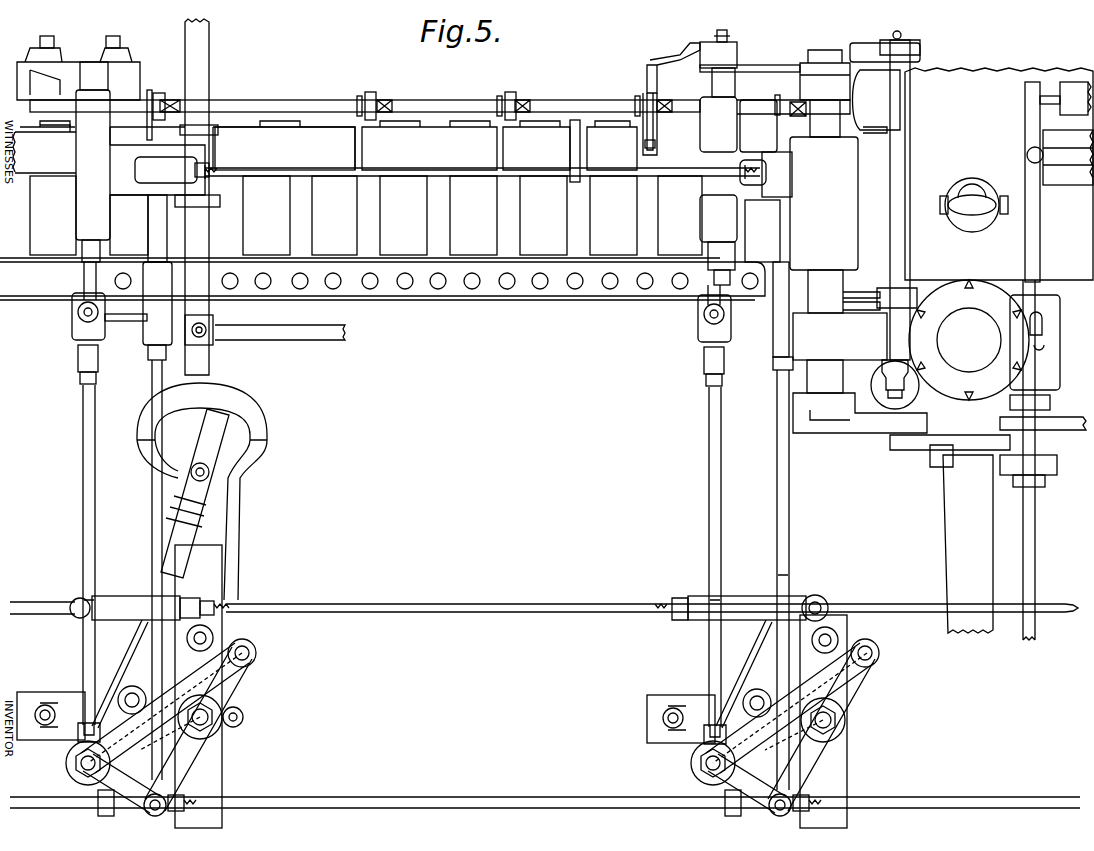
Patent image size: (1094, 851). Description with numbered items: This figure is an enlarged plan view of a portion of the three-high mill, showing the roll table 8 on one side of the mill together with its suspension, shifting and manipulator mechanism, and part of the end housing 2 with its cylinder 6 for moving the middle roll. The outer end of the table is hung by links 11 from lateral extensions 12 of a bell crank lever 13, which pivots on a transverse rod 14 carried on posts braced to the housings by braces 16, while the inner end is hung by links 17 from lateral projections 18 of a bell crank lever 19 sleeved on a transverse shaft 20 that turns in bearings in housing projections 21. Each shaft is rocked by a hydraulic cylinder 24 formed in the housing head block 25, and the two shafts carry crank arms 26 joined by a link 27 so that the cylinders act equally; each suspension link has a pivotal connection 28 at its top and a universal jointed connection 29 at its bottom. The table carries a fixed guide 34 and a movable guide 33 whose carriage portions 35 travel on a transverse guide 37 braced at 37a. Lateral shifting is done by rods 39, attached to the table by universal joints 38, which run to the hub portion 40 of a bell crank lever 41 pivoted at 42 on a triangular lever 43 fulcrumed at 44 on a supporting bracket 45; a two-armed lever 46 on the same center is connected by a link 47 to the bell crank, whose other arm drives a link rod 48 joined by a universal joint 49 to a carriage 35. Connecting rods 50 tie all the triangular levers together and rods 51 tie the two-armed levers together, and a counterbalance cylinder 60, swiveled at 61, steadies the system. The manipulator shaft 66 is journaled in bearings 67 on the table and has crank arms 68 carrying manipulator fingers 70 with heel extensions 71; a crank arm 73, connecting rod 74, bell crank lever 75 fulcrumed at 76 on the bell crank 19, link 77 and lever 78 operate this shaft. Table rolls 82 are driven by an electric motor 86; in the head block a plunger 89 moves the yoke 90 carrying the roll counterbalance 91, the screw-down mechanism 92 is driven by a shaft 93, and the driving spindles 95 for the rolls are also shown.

The end housing 2 is at (840, 336).
The cylinder 6 is at (870, 380).
The roll table 8 is at (482, 192).
The link 11 is at (84, 301).
The lateral extension 12 is at (93, 165).
The bell crank lever 13 is at (153, 170).
The transverse rod 14 is at (213, 52).
The brace 16 is at (316, 338).
The link 17 is at (718, 163).
The lateral projection 18 is at (718, 169).
The bell crank lever 19 is at (799, 203).
The transverse shaft 20 is at (844, 291).
The projection 21 is at (830, 362).
The hydraulic cylinder 24 is at (900, 110).
The housing head block 25 is at (999, 174).
The crank arm 26 is at (850, 424).
The link 27 is at (904, 444).
The pivotal connection 28 is at (108, 72).
The universal jointed connection 29 is at (72, 323).
The guide 33 is at (457, 292).
The guide 34 is at (328, 148).
The carriage portion 35 is at (143, 340).
The transverse guide 37 is at (156, 228).
The brace 37a is at (130, 325).
The universal joint 38 is at (80, 354).
The rod 39 is at (710, 444).
The hub portion 40 is at (66, 760).
The bell crank lever 41 is at (453, 766).
The pivot 42 is at (80, 766).
The triangular lever 43 is at (132, 650).
The fulcrum 44 is at (208, 724).
The supporting bracket 45 is at (38, 698).
The two-armed lever 46 is at (232, 685).
The link 47 is at (477, 708).
The link rod 48 is at (152, 568).
The universal joint 49 is at (150, 360).
The connecting rod 50 is at (448, 610).
The rod 51 is at (62, 806).
The counterbalance cylinder 60 is at (200, 506).
The swivel 61 is at (209, 472).
The manipulator shaft 66 is at (280, 102).
The bearing 67 is at (385, 102).
The crank arm 68 is at (370, 93).
The manipulator finger 70 is at (358, 150).
The extension 71 is at (358, 98).
The crank arm 73 is at (645, 128).
The connecting rod 74 is at (655, 140).
The bell crank lever 75 is at (668, 62).
The fulcrum 76 is at (712, 23).
The link 77 is at (750, 57).
The lever 78 is at (815, 80).
The table roll 82 is at (366, 215).
The electric motor 86 is at (75, 50).
The plunger 89 is at (970, 190).
The yoke 90 is at (972, 205).
The roll counterbalance 91 is at (942, 198).
The screw-down mechanism 92 is at (984, 340).
The shaft 93 is at (1036, 557).
The driving spindle 95 is at (968, 544).